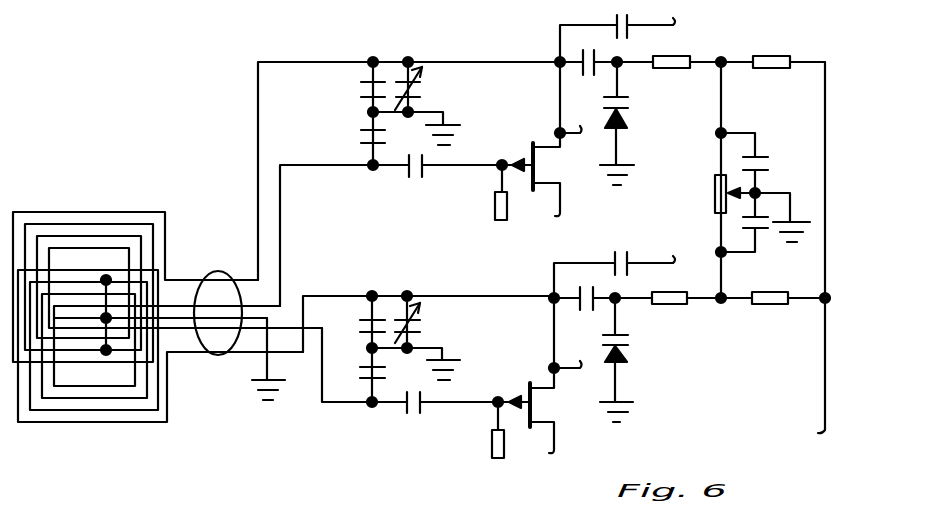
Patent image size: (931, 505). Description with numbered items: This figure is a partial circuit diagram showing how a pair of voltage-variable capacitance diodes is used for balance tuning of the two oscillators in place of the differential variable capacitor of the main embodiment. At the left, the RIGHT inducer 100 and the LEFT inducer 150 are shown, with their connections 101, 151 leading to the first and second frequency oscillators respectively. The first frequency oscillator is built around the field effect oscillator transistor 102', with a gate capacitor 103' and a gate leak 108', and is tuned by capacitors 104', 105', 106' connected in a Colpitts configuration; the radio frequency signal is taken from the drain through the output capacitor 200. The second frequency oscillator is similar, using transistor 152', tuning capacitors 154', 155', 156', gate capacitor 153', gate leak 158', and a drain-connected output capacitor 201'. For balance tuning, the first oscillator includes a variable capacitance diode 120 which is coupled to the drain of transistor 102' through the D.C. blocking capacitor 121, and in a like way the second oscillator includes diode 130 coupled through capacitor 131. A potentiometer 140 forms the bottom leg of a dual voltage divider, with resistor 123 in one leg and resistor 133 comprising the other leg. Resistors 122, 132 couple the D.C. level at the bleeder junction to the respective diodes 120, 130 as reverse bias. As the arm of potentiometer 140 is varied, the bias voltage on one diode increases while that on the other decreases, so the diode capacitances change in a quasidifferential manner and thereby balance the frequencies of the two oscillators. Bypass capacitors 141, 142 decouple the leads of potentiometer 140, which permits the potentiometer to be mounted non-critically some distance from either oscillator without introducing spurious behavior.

The RIGHT inducer 100 is at (108, 232).
The connection of RIGHT inducer 101 is at (251, 289).
The LEFT inducer 150 is at (98, 400).
The connection of LEFT inducer 151 is at (262, 346).
The tuning capacitor 105' is at (349, 87).
The tuning capacitor 104' is at (438, 87).
The tuning capacitor 106' is at (349, 141).
The gate capacitor 103' is at (437, 182).
The gate leak 108' is at (477, 190).
The oscillator transistor 102' is at (542, 158).
The D.C. blocking capacitor 121 is at (577, 56).
The output capacitor 200 is at (625, 37).
The resistor 122 is at (675, 65).
The resistor 123 is at (757, 62).
The variable capacitance diode 120 is at (633, 115).
The potentiometer 140 is at (720, 202).
The bypass capacitor 141 is at (772, 168).
The bypass capacitor 142 is at (760, 237).
The D.C. blocking capacitor 131 is at (580, 280).
The output capacitor 201' is at (614, 264).
The resistor 132 is at (665, 302).
The resistor 133 is at (760, 302).
The variable capacitance diode 130 is at (628, 358).
The transistor 152' is at (540, 399).
The tuning capacitor 155' is at (353, 322).
The tuning capacitor 154' is at (435, 322).
The tuning capacitor 156' is at (340, 387).
The gate capacitor 153' is at (435, 416).
The gate leak 158' is at (478, 431).